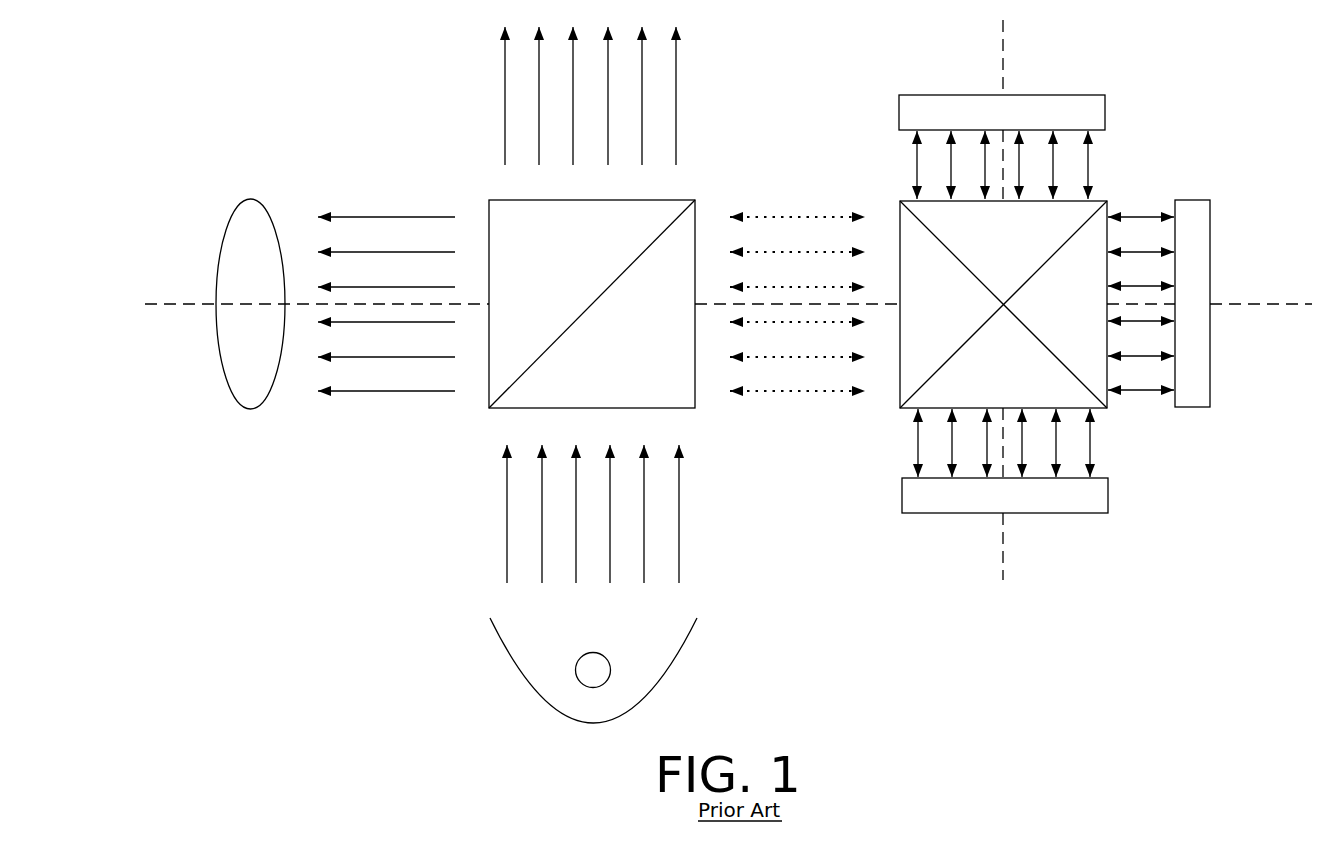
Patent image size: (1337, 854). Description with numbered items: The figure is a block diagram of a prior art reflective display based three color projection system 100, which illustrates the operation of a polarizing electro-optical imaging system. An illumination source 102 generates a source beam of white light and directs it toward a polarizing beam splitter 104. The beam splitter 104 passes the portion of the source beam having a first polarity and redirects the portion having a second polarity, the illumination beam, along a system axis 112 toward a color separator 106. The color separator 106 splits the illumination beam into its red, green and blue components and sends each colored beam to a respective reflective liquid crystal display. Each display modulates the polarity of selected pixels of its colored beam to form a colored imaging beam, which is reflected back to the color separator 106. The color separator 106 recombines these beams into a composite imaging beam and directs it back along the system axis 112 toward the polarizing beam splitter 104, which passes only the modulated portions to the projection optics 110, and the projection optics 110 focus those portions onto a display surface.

The projection system 100 is at (1037, 668).
The illumination source 102 is at (690, 628).
The polarizing beam splitter 104 is at (697, 398).
The color separator 106 is at (898, 204).
The projection optics 110 is at (255, 202).
The system axis 112 is at (156, 304).